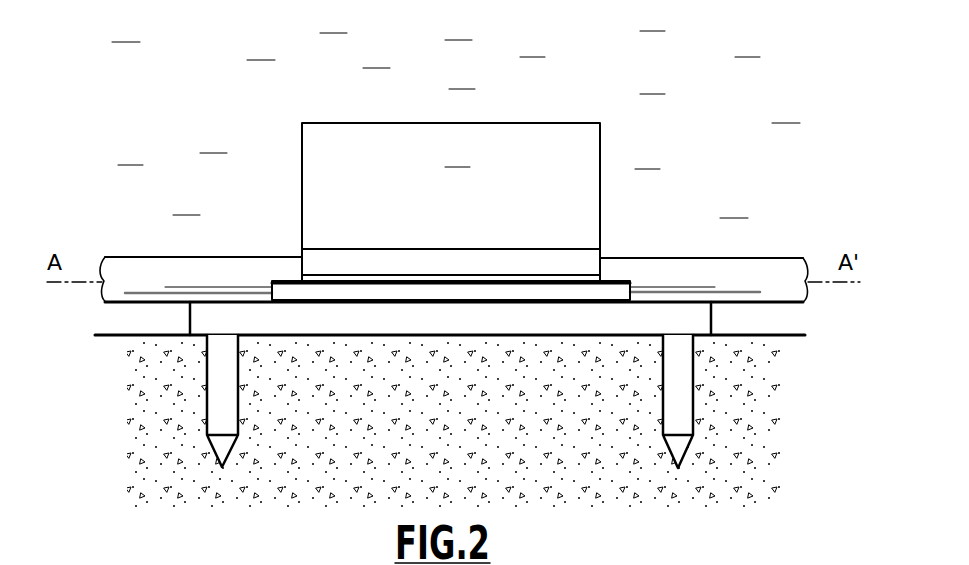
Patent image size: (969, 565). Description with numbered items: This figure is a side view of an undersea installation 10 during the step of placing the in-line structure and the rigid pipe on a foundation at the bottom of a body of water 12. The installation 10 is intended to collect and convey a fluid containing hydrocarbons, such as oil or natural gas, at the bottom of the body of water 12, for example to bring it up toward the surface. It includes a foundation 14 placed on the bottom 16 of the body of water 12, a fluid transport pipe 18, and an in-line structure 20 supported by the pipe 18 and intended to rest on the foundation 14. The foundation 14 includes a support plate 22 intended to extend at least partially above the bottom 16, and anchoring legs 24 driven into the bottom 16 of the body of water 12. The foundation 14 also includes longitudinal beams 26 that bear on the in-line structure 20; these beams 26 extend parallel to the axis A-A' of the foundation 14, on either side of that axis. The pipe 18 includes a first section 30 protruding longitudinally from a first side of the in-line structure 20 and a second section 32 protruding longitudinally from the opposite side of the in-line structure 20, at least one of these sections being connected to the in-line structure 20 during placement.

The undersea installation 10 is at (686, 70).
The body of water 12 is at (456, 124).
The foundation 14 is at (182, 418).
The bottom of the body of water 16 is at (133, 340).
The fluid transport pipe 18 is at (768, 314).
The in-line structure 20 is at (576, 114).
The support plate 22 is at (475, 317).
The anchoring legs 24 is at (233, 410).
The longitudinal beams 26 is at (360, 293).
The first section 30 is at (150, 272).
The second section 32 is at (693, 270).